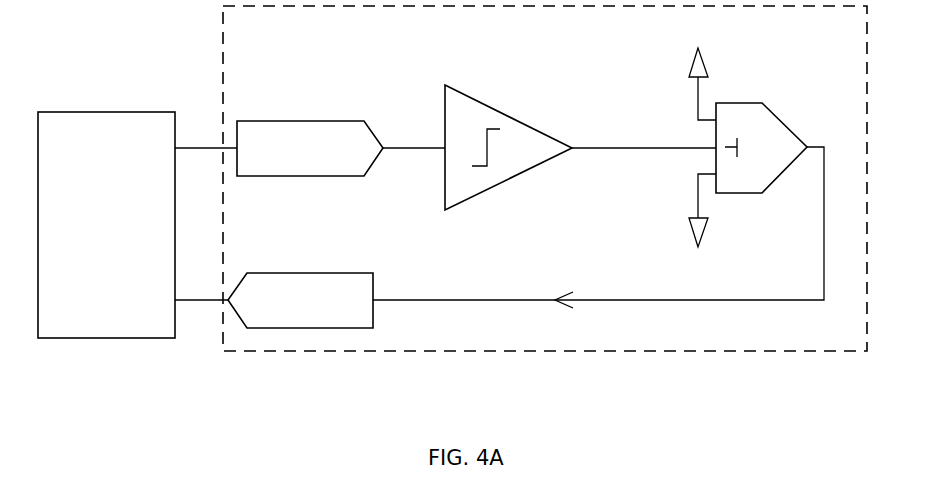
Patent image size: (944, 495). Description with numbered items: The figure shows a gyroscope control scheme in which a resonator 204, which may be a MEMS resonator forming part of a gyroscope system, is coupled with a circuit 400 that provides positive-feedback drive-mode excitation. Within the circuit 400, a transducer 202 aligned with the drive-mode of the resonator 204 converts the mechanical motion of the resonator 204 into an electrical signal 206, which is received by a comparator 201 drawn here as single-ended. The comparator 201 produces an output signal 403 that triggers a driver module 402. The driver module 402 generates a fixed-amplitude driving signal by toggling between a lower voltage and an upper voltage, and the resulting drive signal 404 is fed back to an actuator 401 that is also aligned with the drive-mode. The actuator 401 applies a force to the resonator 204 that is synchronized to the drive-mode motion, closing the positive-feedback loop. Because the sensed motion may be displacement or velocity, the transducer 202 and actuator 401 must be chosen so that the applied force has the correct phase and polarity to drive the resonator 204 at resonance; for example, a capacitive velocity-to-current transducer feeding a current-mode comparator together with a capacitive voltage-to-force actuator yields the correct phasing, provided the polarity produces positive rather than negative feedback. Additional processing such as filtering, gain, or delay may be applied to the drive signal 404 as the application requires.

The circuit 400 is at (858, 30).
The resonator 204 is at (105, 112).
The transducer 202 is at (288, 121).
The electrical signal 206 is at (414, 138).
The comparator 201 is at (495, 107).
The output signal 403 is at (644, 138).
The driver module 402 is at (770, 103).
The drive signal 404 is at (598, 227).
The actuator 401 is at (287, 273).